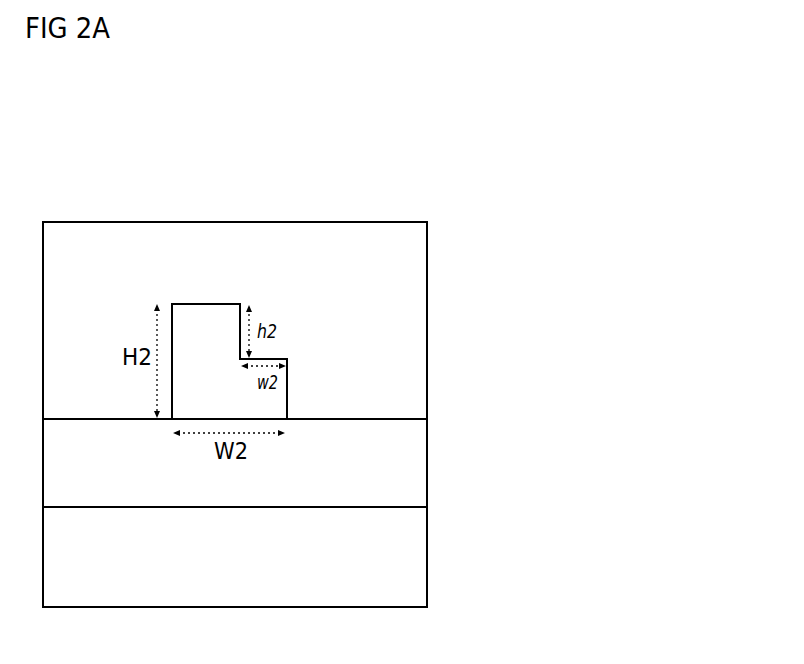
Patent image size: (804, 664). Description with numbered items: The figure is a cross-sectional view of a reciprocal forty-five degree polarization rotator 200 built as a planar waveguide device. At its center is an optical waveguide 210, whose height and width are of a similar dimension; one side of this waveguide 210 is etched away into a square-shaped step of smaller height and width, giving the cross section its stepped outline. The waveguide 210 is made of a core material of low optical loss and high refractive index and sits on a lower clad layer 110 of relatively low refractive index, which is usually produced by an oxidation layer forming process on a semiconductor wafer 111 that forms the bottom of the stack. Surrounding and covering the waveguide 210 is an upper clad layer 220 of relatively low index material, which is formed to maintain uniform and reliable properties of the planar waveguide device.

The semiconductor device / pattern structure 200 is at (207, 222).
The optical waveguide 210 is at (229, 347).
The upper clad layer 220 is at (427, 274).
The lower clad layer 110 is at (427, 463).
The semiconductor wafer 111 is at (427, 565).